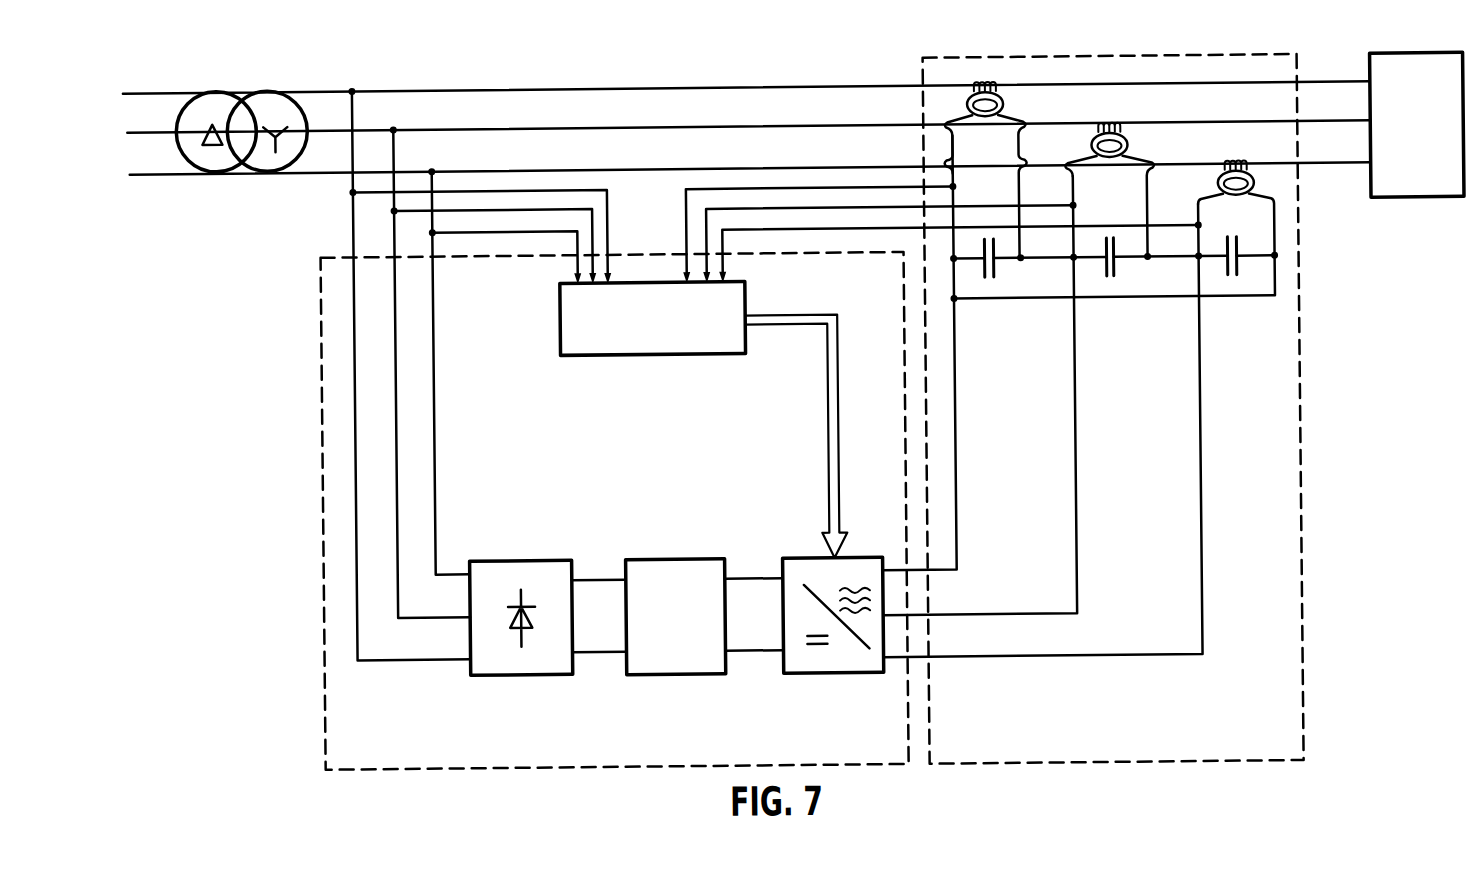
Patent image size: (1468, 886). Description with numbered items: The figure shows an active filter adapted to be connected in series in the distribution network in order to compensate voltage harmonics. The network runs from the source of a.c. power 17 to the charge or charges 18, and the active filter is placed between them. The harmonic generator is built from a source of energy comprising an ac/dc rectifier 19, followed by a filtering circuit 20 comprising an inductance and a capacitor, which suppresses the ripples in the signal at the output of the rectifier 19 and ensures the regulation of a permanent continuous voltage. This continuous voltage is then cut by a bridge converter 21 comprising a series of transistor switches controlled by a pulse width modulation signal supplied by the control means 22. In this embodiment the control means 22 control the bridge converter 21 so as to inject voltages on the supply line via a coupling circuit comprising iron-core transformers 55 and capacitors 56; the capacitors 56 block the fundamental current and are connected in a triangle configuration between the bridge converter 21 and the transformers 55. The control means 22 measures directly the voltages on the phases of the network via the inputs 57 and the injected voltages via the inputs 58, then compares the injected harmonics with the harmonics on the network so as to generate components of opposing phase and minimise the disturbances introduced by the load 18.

The source of a.c. power 17 is at (261, 88).
The charge 18 is at (1418, 60).
The ac/dc rectifier 19 is at (536, 559).
The filtering circuit 20 is at (669, 559).
The bridge converter 21 is at (849, 560).
The controller 22 is at (693, 357).
The iron-core transformers 55 is at (1243, 163).
The capacitors 56 is at (996, 279).
The inputs 57 is at (573, 259).
The inputs 58 is at (731, 265).